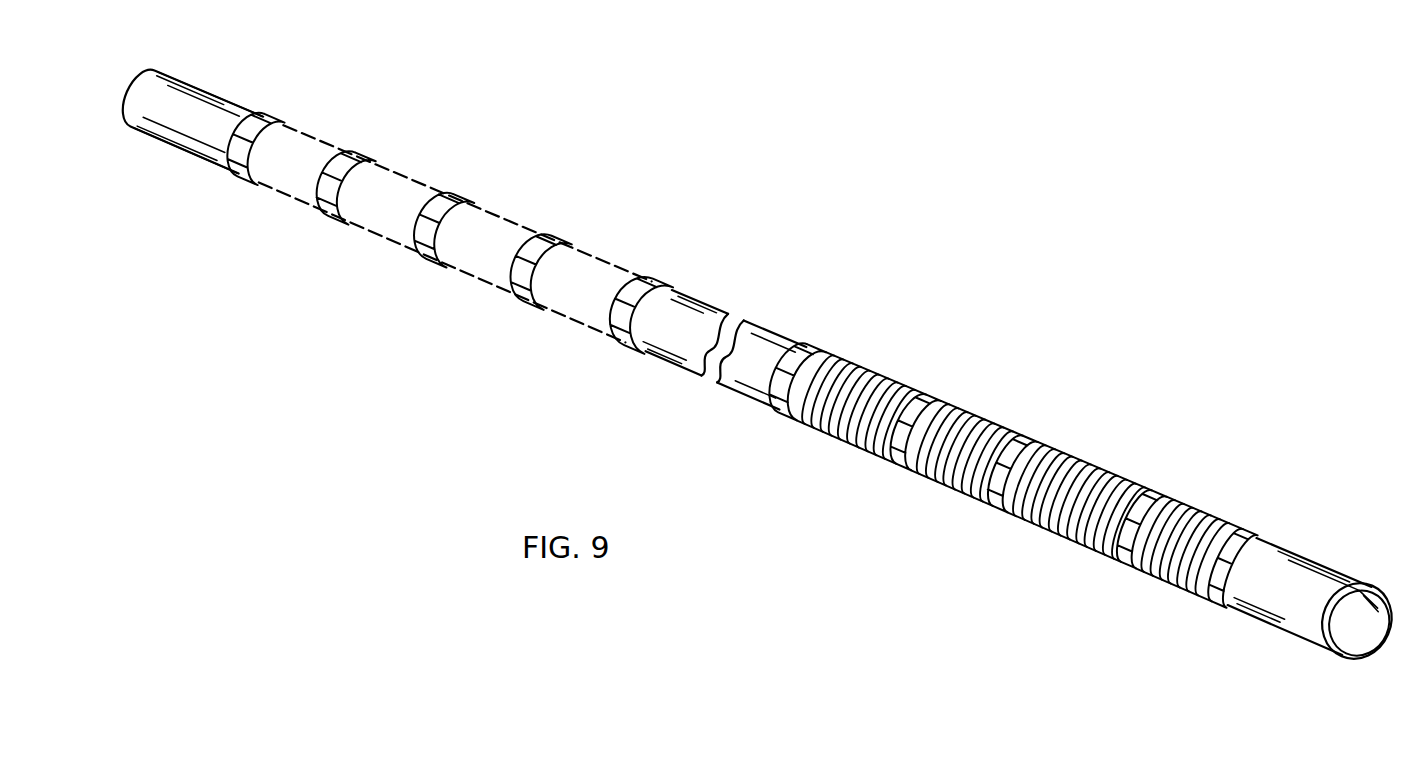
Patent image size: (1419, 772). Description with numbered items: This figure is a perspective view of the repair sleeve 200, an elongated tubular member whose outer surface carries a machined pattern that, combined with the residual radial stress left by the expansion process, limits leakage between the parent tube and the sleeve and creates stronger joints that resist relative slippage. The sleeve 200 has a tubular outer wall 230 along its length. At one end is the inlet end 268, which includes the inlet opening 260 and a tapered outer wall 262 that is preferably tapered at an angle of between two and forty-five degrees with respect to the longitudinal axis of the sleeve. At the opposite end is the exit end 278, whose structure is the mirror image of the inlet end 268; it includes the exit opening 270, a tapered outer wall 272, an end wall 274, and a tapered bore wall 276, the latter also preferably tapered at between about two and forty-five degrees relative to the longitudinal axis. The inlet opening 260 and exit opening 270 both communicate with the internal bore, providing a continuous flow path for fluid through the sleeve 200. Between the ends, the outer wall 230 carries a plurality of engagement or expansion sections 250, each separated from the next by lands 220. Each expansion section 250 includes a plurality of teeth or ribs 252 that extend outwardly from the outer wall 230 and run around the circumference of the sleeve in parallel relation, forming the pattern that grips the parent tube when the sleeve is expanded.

The sleeve 200 is at (860, 480).
The lands 220 is at (467, 200).
The outer wall 230 is at (693, 300).
The engagement sections 250 is at (861, 356).
The ribs 252 is at (1200, 511).
The inlet opening 260 is at (119, 87).
The tapered outer wall 262 is at (160, 70).
The inlet end 268 is at (207, 183).
The exit opening 270 is at (1380, 658).
The tapered outer wall 272 is at (1353, 577).
The end wall 274 is at (1390, 581).
The tapered bore wall 276 is at (1388, 644).
The exit end 278 is at (1271, 640).